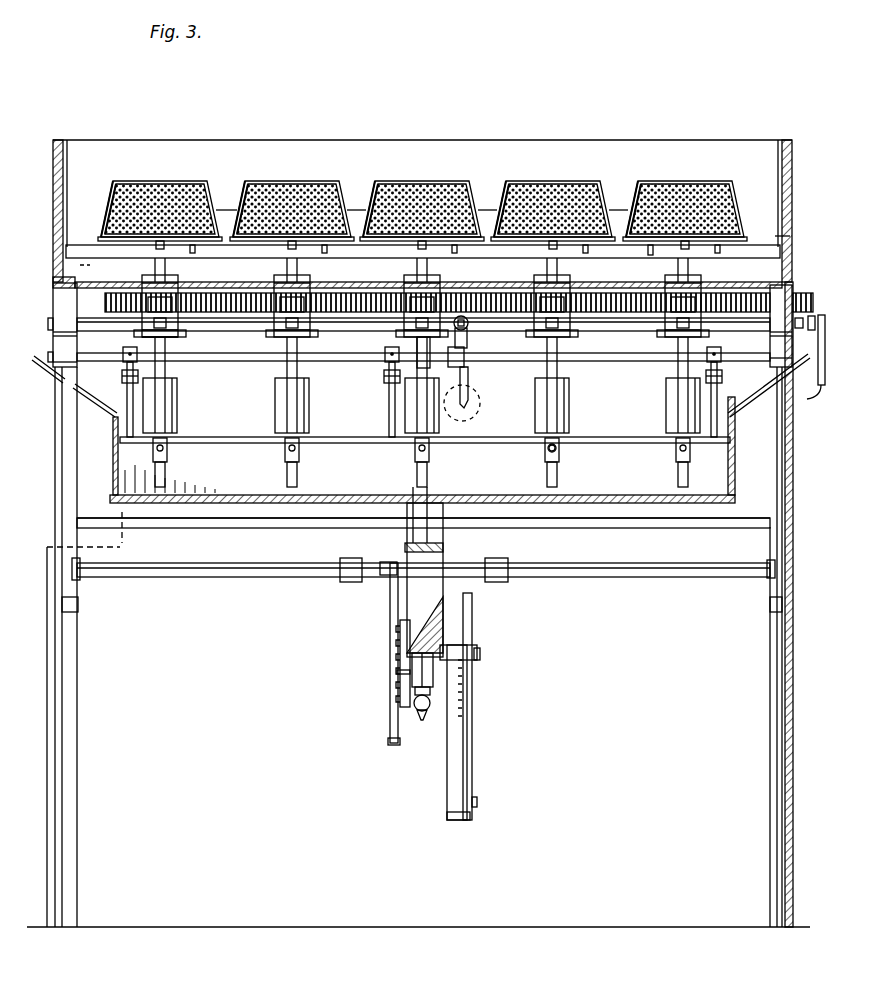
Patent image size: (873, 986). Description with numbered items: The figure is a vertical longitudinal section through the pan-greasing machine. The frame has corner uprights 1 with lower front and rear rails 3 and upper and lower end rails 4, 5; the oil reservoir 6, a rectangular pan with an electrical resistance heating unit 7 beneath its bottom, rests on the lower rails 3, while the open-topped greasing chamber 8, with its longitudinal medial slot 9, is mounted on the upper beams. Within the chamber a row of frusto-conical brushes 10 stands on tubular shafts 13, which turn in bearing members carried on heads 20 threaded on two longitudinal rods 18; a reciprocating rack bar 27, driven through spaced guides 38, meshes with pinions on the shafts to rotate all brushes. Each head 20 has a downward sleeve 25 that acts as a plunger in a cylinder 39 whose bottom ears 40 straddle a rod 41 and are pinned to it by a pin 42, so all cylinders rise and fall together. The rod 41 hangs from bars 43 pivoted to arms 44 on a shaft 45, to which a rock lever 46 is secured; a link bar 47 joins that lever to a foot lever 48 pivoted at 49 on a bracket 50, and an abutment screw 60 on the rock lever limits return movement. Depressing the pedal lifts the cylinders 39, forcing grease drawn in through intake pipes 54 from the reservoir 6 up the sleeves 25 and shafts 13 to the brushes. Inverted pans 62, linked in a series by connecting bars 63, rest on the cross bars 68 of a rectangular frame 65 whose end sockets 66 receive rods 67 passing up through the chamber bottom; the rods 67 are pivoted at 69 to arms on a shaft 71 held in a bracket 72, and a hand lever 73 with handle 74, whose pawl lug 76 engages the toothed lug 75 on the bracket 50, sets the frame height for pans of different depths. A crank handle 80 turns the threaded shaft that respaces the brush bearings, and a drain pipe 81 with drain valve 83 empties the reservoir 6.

The corner uprights 1 is at (777, 682).
The lower front and rear rails 3 is at (628, 515).
The upper end rails 4 is at (67, 140).
The lower end rails 5 is at (786, 512).
The oil reservoir 6 is at (45, 253).
The electrical resistance heating unit 7 is at (222, 503).
The greasing chamber 8 is at (756, 150).
The slot 9 is at (212, 268).
The brushes 10 is at (175, 195).
The tubular shaft 13 is at (430, 268).
The rods 18 is at (240, 325).
The heads 20 is at (165, 322).
The sleeve 25 is at (585, 354).
The rack bar 27 is at (348, 300).
The spaced guides 38 is at (443, 387).
The cylinders 39 is at (278, 411).
The spaced ears 40 is at (552, 432).
The rod 41 is at (425, 454).
The pin 42 is at (546, 449).
The bars 43 is at (135, 412).
The arms 44 is at (722, 372).
The shaft 45 is at (336, 357).
The rock lever 46 is at (476, 337).
The link bar 47 is at (470, 388).
The foot lever 48 is at (462, 741).
The pivot 49 is at (480, 655).
The bracket 50 is at (430, 585).
The intake pipe 54 is at (286, 468).
The abutment screw 60 is at (468, 312).
The pans 62 is at (143, 181).
The connecting bars 63 is at (357, 215).
The frame 65 is at (750, 248).
The sockets 66 is at (788, 238).
The rods 67 is at (70, 428).
The cross bars 68 is at (648, 252).
The pivotal connection 69 is at (770, 605).
The shaft 71 is at (645, 570).
The bracket 72 is at (343, 575).
The hand lever 73 is at (390, 610).
The handle 74 is at (392, 738).
The lug 75 is at (400, 696).
The pawl lug 76 is at (400, 672).
The crank handle 80 is at (425, 667).
The drain pipe 81 is at (430, 505).
The drain valve 83 is at (420, 715).